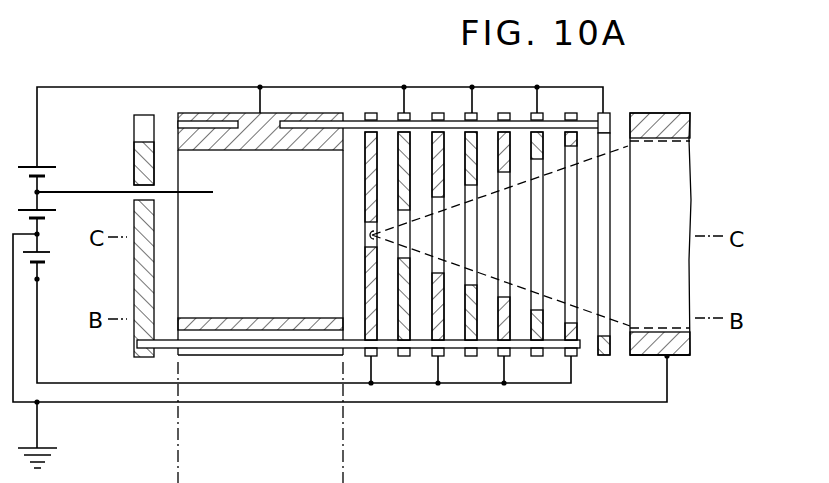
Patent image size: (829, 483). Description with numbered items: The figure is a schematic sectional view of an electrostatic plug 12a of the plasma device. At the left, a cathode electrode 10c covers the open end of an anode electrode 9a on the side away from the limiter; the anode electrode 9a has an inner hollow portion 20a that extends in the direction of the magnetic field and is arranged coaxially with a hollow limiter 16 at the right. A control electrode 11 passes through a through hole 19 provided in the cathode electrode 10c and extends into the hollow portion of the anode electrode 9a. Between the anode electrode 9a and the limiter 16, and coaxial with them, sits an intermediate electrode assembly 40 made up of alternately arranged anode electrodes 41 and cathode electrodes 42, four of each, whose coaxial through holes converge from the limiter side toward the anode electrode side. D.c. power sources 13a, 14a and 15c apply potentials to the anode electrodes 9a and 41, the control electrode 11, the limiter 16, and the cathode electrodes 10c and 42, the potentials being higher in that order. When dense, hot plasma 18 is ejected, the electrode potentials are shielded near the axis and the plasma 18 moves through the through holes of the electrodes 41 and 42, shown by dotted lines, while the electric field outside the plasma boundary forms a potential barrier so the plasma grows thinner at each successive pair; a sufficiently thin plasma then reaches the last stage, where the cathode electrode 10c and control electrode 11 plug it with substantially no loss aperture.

The d.c. power source 14a is at (52, 174).
The d.c. power source 13a is at (49, 217).
The d.c. power source 15c is at (50, 256).
The control electrode 11 is at (195, 193).
The through hole 19 is at (133, 186).
The cathode electrode 10c is at (162, 328).
The electrostatic plug 12a is at (273, 480).
The anode electrode 9a is at (247, 318).
The inner hollow portion 20a is at (290, 297).
The intermediate electrode assembly 40 is at (509, 297).
The anode electrode 41 is at (410, 328).
The cathode electrode 42 is at (377, 328).
The hollow limiter 16 is at (654, 113).
The plasma 18 is at (676, 321).